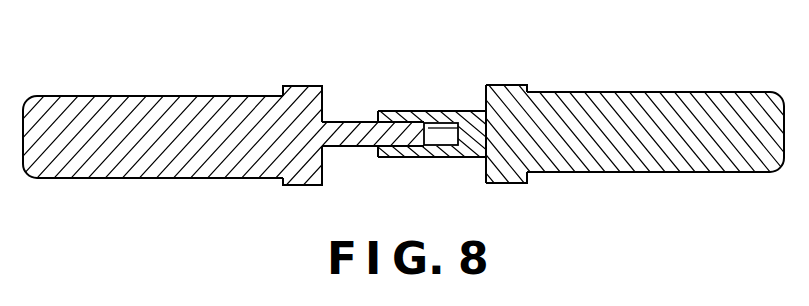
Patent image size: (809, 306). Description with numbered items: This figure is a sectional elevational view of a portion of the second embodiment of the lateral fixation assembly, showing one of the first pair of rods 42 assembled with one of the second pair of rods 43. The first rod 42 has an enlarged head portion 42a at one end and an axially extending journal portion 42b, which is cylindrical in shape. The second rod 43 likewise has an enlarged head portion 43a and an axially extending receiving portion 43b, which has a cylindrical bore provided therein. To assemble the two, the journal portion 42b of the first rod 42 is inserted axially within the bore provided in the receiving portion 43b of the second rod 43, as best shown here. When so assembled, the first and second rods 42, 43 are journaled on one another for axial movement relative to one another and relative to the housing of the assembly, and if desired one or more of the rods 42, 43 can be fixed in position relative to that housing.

The first pair of rods 42 is at (98, 170).
The enlarged head portion 42a is at (298, 88).
The axially extending journal portion 42b is at (343, 136).
The second pair of rods 43 is at (672, 158).
The enlarged head portion 43a is at (508, 88).
The axially extending receiving portion 43b is at (427, 122).